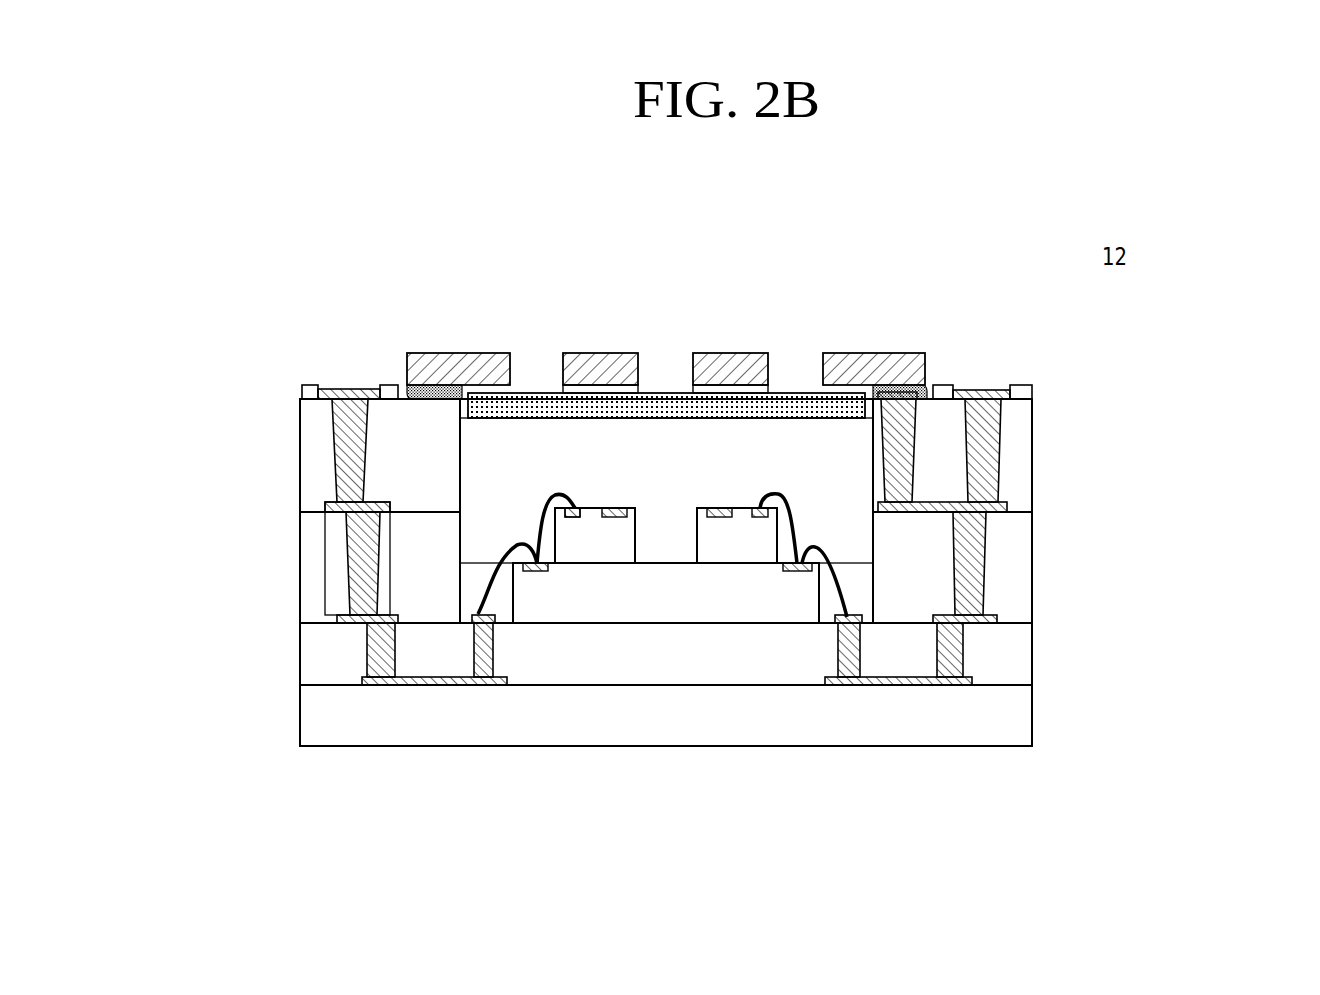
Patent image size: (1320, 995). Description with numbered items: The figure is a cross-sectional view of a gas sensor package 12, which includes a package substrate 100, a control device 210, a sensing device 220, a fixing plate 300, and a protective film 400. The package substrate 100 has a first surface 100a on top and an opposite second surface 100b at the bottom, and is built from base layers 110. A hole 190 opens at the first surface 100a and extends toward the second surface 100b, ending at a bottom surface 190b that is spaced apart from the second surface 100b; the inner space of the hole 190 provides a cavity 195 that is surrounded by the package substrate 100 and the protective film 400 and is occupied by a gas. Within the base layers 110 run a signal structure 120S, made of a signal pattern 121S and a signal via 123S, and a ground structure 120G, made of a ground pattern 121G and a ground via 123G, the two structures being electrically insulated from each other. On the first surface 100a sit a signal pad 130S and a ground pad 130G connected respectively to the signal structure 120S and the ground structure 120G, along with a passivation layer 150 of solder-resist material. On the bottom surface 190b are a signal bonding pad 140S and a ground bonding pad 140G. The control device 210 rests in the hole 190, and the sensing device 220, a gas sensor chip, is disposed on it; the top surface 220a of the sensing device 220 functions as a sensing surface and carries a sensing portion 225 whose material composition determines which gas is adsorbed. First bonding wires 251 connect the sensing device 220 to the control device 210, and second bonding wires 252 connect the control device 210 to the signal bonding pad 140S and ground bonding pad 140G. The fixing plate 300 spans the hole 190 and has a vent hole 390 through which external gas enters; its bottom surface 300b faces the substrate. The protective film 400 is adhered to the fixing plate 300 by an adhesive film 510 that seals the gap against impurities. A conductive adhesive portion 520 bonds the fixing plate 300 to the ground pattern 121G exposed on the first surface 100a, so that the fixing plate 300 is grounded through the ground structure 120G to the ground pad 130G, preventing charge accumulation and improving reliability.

The gas sensor package 12 is at (1128, 268).
The package substrate 100 is at (1032, 400).
The first surface 100a is at (305, 388).
The second surface 100b is at (315, 747).
The base layers 110 is at (1018, 563).
The signal structure 120S is at (197, 492).
The signal pattern 121S is at (325, 505).
The signal via 123S is at (353, 530).
The ground structure 120G is at (1138, 425).
The ground pattern 121G is at (918, 396).
The ground via 123G is at (985, 473).
The signal pad 130S is at (343, 392).
The ground pad 130G is at (972, 390).
The signal bonding pad 140S is at (480, 615).
The ground bonding pad 140G is at (850, 620).
The passivation layer 150 is at (1023, 386).
The hole 190 is at (472, 566).
The bottom surface of the hole 190b is at (773, 624).
The cavity 195 is at (737, 455).
The control device 210 is at (727, 603).
The sensing device 220 is at (573, 547).
The top surface of the sensing device 220a is at (628, 503).
The sensing portion 225 is at (617, 517).
The first bonding wires 251 is at (553, 494).
The second bonding wires 252 is at (497, 596).
The fixing plate 300 is at (880, 362).
The bottom surface of the fixing plate 300b is at (614, 393).
The vent hole 390 is at (522, 380).
The protective film 400 is at (665, 405).
The adhesive film 510 is at (829, 389).
The adhesive portion 520 is at (434, 392).